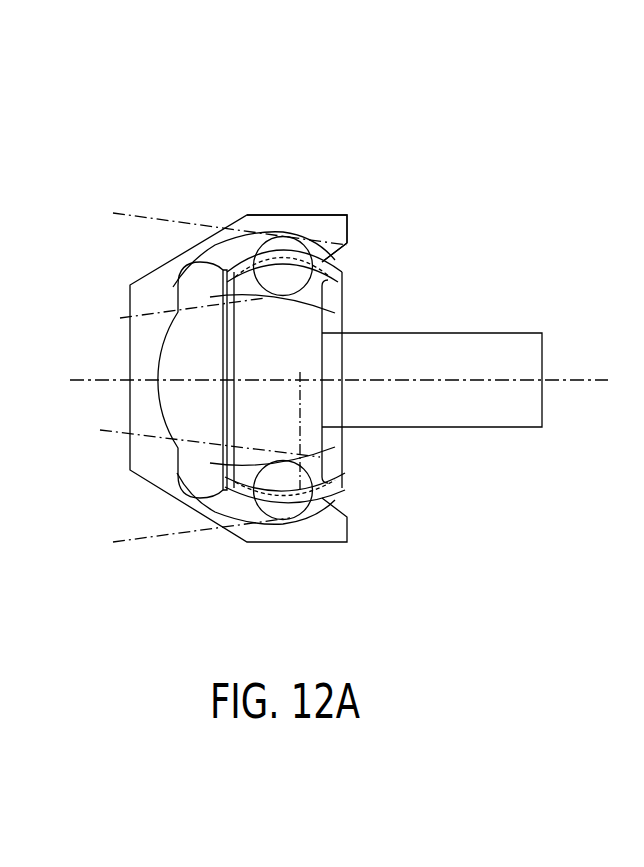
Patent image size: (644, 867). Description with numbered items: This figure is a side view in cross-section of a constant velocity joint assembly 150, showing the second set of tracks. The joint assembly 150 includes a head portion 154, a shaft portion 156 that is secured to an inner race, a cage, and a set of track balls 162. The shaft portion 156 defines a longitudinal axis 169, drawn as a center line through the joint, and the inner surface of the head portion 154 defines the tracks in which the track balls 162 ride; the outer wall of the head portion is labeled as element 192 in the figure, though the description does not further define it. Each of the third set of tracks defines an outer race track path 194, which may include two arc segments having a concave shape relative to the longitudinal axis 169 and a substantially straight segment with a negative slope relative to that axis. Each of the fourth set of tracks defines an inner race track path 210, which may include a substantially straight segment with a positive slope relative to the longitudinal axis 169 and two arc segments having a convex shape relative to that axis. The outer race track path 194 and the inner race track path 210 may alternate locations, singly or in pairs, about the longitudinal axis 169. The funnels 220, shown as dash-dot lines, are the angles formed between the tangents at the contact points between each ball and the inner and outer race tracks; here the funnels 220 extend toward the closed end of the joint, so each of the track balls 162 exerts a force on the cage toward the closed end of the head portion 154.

The joint assembly 150 is at (374, 144).
The head portion 154 is at (241, 207).
The shaft portion 156 is at (430, 350).
The track balls 162 is at (272, 250).
The longitudinal axis 169 is at (82, 377).
The outer housing 192 is at (119, 465).
The outer race track path 194 is at (350, 280).
The inner race track path 210 is at (346, 287).
The funnels 220 is at (122, 210).